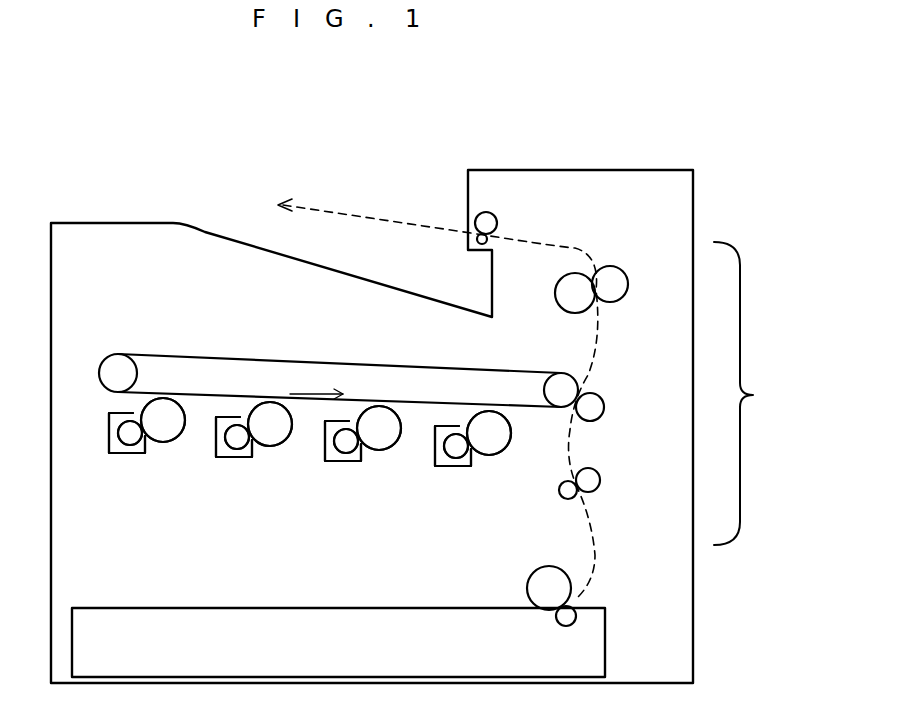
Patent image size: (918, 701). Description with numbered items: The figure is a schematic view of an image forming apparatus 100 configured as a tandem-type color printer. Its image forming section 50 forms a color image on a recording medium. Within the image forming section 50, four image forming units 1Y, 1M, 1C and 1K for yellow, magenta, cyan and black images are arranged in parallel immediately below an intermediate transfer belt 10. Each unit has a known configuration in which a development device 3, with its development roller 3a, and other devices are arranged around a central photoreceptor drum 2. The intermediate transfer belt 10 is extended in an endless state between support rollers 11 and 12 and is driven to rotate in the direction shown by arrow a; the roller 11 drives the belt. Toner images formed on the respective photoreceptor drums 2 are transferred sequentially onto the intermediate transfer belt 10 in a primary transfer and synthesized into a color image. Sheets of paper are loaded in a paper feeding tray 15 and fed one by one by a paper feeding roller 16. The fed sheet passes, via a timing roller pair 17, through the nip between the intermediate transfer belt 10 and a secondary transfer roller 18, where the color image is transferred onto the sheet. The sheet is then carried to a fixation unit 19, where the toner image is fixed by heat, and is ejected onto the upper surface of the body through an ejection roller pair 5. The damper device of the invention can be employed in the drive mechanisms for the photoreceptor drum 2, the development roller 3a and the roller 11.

The image forming apparatus 100 is at (162, 142).
The image forming unit 1Y is at (150, 462).
The image forming unit 1M is at (257, 466).
The image forming unit 1C is at (366, 477).
The image forming unit 1K is at (475, 482).
The photoreceptor drum 2 is at (163, 442).
The development device 3 is at (128, 453).
The development roller 3a is at (118, 434).
The ejection roller pair 5 is at (494, 212).
The intermediate transfer belt 10 is at (260, 358).
The support roller 11 is at (542, 375).
The support roller 12 is at (136, 355).
The paper feeding tray 15 is at (397, 607).
The paper feeding roller 16 is at (527, 588).
The timing roller pair 17 is at (600, 477).
The secondary transfer roller 18 is at (605, 407).
The fixation unit 19 is at (613, 266).
The image forming section 50 is at (757, 393).
The arrow a is at (327, 392).